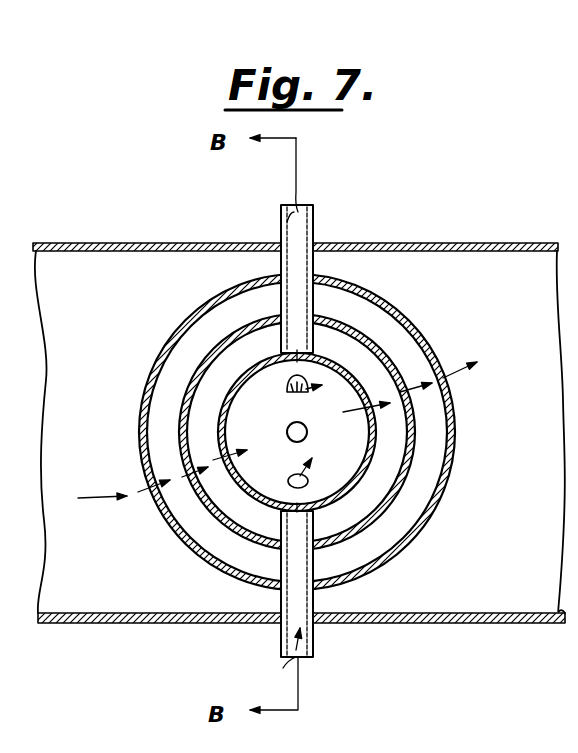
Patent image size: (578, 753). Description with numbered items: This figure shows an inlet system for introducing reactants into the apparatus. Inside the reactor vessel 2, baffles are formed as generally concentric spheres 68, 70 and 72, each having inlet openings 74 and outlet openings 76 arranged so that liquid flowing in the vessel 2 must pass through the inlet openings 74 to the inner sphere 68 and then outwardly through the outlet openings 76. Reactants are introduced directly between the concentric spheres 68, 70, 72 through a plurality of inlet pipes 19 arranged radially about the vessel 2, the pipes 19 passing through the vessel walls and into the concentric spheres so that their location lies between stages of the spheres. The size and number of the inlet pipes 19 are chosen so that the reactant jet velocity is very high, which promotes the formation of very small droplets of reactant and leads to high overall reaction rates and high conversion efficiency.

The vessel 2 is at (464, 243).
The inlet pipes 19 is at (294, 212).
The inner concentric sphere 68 is at (358, 492).
The concentric sphere 70 is at (350, 327).
The concentric sphere 72 is at (417, 335).
The inlet openings 74 is at (290, 428).
The outlet openings 76 is at (370, 432).